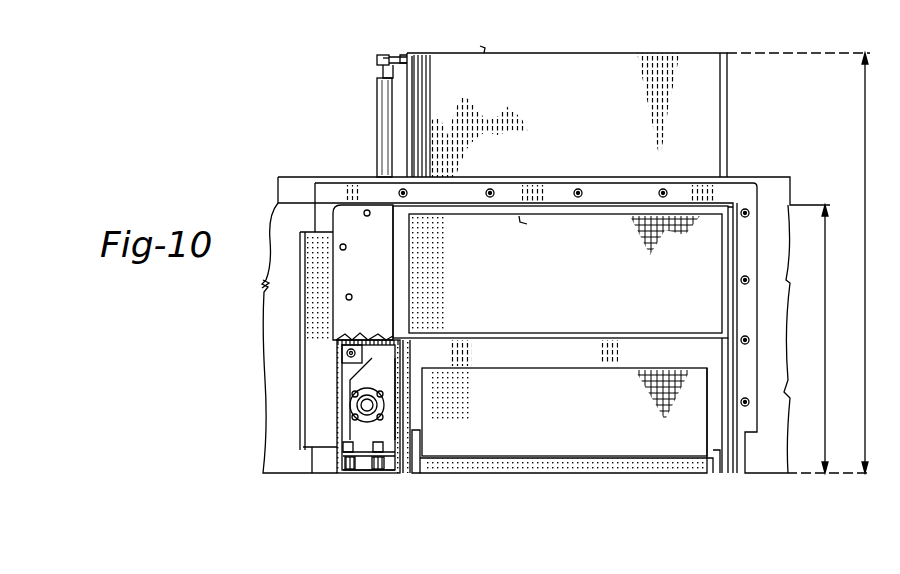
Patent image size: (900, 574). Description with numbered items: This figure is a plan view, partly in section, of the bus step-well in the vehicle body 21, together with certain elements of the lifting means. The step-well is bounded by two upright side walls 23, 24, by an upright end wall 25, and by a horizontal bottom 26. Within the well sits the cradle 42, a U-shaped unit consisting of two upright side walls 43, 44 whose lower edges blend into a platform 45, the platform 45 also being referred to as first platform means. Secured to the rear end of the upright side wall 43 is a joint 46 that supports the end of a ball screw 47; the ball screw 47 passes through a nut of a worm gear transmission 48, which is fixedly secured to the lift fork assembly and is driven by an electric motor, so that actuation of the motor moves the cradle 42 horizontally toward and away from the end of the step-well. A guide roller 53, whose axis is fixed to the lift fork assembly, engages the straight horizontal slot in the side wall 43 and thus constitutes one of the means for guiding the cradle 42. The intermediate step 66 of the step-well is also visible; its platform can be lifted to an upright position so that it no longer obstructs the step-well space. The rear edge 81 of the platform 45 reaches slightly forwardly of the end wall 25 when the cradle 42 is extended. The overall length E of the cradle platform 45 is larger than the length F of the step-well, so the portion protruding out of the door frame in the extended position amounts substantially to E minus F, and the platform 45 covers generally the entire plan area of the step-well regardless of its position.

The vehicle body 21 is at (272, 480).
The upright side wall 23 is at (413, 352).
The upright side wall 24 is at (712, 350).
The upright end wall 25 is at (534, 227).
The horizontal bottom 26 is at (576, 363).
The cradle 42 is at (728, 93).
The upright side wall 43 is at (423, 393).
The upright side wall 44 is at (722, 388).
The platform 45 is at (556, 103).
The joint 46 is at (376, 67).
The ball screw 47 is at (376, 121).
The worm gear transmission 48 is at (369, 388).
The guide roller 53 is at (413, 430).
The intermediate step 66 is at (567, 303).
The rear edge 81 is at (471, 42).
The overall length E is at (861, 263).
The length F is at (822, 339).